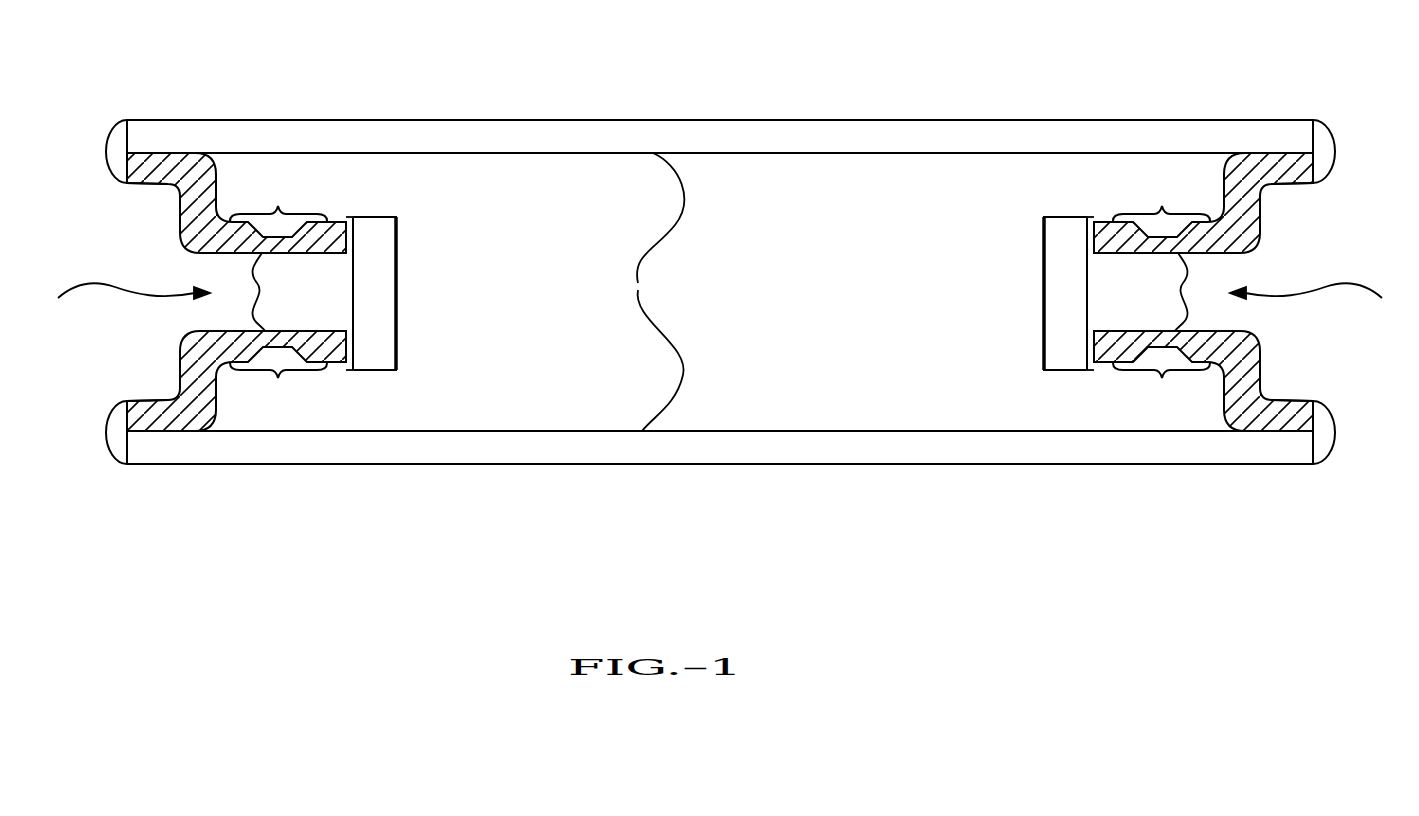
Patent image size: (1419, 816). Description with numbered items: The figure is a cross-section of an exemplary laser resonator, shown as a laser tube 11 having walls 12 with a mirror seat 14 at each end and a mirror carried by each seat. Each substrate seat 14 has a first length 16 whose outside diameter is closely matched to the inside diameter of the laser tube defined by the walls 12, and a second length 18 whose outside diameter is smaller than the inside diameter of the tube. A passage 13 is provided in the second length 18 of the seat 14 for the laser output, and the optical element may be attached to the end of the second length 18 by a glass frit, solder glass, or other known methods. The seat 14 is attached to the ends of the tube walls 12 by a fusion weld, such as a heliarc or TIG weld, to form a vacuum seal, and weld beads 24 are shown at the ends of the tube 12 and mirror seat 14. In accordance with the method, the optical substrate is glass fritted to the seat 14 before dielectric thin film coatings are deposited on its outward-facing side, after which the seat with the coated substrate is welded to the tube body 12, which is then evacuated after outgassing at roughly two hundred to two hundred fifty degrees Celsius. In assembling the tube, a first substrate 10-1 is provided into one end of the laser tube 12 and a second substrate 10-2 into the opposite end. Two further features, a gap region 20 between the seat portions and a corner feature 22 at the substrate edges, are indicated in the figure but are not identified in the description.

The first substrate 10-1 is at (375, 293).
The second substrate 10-2 is at (1061, 293).
The laser tube 11 is at (639, 287).
The walls 12 is at (556, 120).
The passage 13 is at (718, 298).
The mirror seat 14 is at (193, 250).
The first length 16 is at (149, 188).
The second length 18 is at (720, 292).
The gap between spacer members 20 is at (719, 292).
The bond at mirror corner 22 is at (346, 216).
The weld beads 24 is at (107, 152).